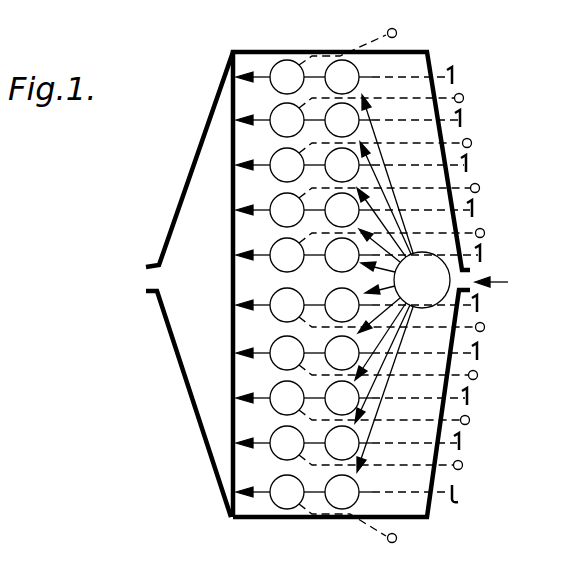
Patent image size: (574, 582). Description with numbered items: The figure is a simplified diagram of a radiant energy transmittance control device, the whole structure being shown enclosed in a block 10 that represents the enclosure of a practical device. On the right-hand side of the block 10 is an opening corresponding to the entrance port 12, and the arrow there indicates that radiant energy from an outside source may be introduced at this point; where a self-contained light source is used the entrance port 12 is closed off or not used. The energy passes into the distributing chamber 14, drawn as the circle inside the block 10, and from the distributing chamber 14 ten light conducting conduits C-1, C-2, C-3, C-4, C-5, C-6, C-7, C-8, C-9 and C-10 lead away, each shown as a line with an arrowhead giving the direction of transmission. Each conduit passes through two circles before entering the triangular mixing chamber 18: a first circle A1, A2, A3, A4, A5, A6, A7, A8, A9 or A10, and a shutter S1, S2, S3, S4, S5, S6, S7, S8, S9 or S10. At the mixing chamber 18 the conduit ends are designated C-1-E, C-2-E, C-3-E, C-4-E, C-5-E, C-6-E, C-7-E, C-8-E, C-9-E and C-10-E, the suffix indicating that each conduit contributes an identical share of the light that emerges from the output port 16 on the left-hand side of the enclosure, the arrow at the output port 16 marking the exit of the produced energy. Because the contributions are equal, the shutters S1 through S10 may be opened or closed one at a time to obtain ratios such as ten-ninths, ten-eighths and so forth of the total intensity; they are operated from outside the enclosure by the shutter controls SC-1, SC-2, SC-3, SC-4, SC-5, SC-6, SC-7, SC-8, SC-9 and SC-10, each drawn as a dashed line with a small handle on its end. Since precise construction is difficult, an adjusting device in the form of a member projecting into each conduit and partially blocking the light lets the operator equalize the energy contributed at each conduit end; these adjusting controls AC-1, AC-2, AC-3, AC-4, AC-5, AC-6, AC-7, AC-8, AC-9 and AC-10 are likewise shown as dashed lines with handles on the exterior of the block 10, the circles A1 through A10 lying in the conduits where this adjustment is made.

The block 10 is at (443, 50).
The entrance port 12 is at (472, 271).
The distributing chamber 14 is at (436, 292).
The output port 16 is at (150, 286).
The mixing chamber 18 is at (180, 241).
The address stage 1 A1 is at (287, 77).
The address stage 2 A2 is at (287, 120).
The address stage 3 A3 is at (287, 165).
The address stage 4 A4 is at (287, 210).
The address stage 5 A5 is at (287, 255).
The address stage 6 A6 is at (287, 305).
The address stage 7 A7 is at (287, 353).
The address stage 8 A8 is at (287, 398).
The address stage 9 A9 is at (287, 443).
The address stage 10 A10 is at (287, 492).
The shutter S1 is at (331, 77).
The shutter S2 is at (331, 120).
The shutter S3 is at (331, 165).
The shutter S4 is at (331, 210).
The shutter S5 is at (331, 255).
The shutter S6 is at (331, 305).
The shutter S7 is at (331, 353).
The shutter S8 is at (331, 398).
The shutter S9 is at (331, 443).
The shutter S10 is at (331, 492).
The light conducting conduit C-1 is at (364, 124).
The light conducting conduit C-2 is at (373, 165).
The light conducting conduit C-3 is at (383, 203).
The light conducting conduit C-4 is at (393, 218).
The light conducting conduit C-5 is at (399, 240).
The light conducting conduit C-6 is at (388, 290).
The light conducting conduit C-7 is at (383, 320).
The light conducting conduit C-8 is at (376, 359).
The light conducting conduit C-9 is at (373, 374).
The light conducting conduit C-10 is at (383, 407).
The conduit end at mixing chamber C-1-E is at (260, 77).
The conduit end at mixing chamber C-2-E is at (263, 119).
The conduit end at mixing chamber C-3-E is at (263, 164).
The conduit end at mixing chamber C-4-E is at (263, 209).
The conduit end at mixing chamber C-5-E is at (263, 254).
The conduit end at mixing chamber C-6-E is at (263, 304).
The conduit end at mixing chamber C-7-E is at (263, 352).
The conduit end at mixing chamber C-8-E is at (263, 397).
The conduit end at mixing chamber C-9-E is at (263, 442).
The conduit end at mixing chamber C-10-E is at (263, 491).
The adjusting control AC-1 is at (388, 31).
The adjusting control AC-2 is at (461, 93).
The adjusting control AC-3 is at (469, 138).
The adjusting control AC-4 is at (477, 183).
The adjusting control AC-5 is at (482, 228).
The adjusting control AC-6 is at (484, 325).
The adjusting control AC-7 is at (477, 373).
The adjusting control AC-8 is at (469, 418).
The adjusting control AC-9 is at (462, 466).
The adjusting control AC-10 is at (365, 530).
The shutter control SC-1 is at (453, 68).
The shutter control SC-2 is at (462, 112).
The shutter control SC-3 is at (468, 158).
The shutter control SC-4 is at (474, 203).
The shutter control SC-5 is at (482, 248).
The shutter control SC-6 is at (480, 301).
The shutter control SC-7 is at (479, 350).
The shutter control SC-8 is at (469, 396).
The shutter control SC-9 is at (462, 445).
The shutter control SC-10 is at (457, 496).